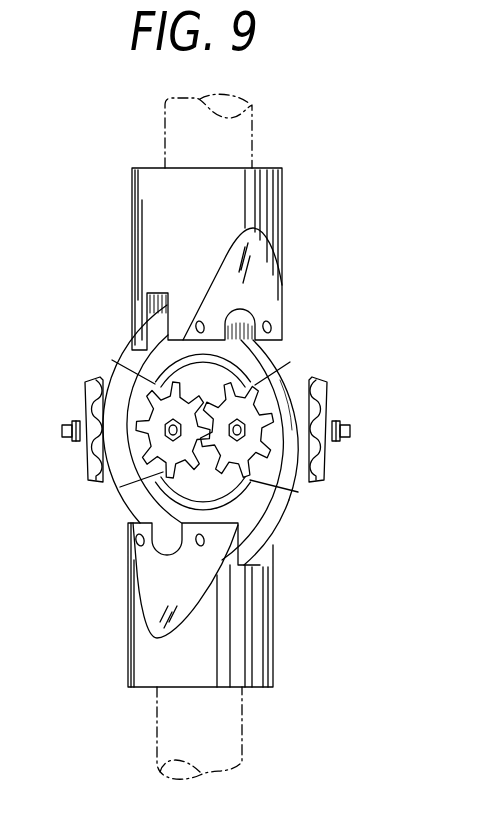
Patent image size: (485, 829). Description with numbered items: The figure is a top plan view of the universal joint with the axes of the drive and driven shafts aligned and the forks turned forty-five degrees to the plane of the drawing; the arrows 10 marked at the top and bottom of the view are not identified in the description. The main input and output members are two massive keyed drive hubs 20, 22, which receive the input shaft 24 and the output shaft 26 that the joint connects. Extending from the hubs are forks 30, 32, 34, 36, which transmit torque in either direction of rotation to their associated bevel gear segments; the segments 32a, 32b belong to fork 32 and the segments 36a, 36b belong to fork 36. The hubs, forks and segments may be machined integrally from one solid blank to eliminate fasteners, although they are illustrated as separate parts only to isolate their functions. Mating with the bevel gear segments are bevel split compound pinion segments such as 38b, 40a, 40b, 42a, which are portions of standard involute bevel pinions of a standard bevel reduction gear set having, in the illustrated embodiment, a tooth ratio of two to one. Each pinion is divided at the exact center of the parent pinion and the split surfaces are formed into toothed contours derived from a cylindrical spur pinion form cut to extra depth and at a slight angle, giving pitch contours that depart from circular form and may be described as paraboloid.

The adjustable joint assembly 10 is at (341, 143).
The drive hub 20 is at (158, 218).
The drive hub 22 is at (262, 657).
The input shaft 24 is at (255, 137).
The output shaft 26 is at (175, 729).
The fork 30 is at (262, 364).
The fork 32 is at (128, 352).
The bevel gear segment 32a is at (140, 372).
The bevel gear segment 32b is at (98, 458).
The fork 34 is at (143, 497).
The fork 36 is at (276, 524).
The bevel gear segment 36a is at (276, 544).
The bevel gear segment 36b is at (304, 486).
The bevel split compound pinion segment 38b is at (330, 400).
The bevel split compound pinion segment 40a is at (260, 373).
The bevel split compound pinion segment 40b is at (142, 492).
The bevel split compound pinion segment 42a is at (87, 393).